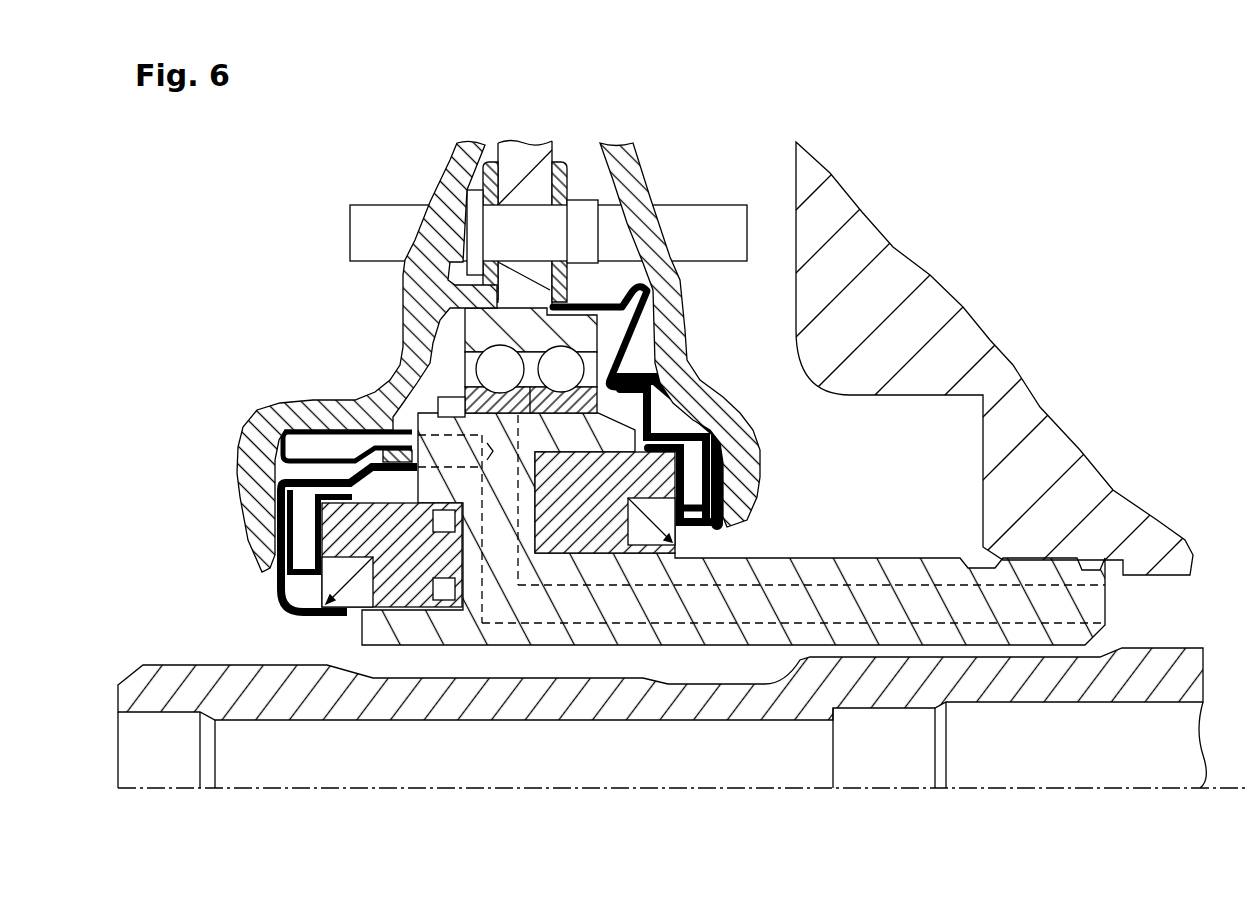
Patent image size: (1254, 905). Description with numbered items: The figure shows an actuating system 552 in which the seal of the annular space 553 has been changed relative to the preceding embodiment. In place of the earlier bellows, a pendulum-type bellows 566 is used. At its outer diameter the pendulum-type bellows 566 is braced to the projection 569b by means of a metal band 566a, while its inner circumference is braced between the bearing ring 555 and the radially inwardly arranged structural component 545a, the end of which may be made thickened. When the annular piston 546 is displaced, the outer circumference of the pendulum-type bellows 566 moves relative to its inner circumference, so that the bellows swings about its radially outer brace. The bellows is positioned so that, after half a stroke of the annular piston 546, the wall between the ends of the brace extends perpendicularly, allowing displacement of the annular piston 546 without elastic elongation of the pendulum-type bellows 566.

The structural component 545a is at (739, 451).
The annular piston 546 is at (593, 535).
The actuating system 552 is at (1130, 250).
The annular space 553 is at (548, 214).
The bearing ring 555 is at (697, 438).
The pendulum-type bellows 566 is at (685, 335).
The metal band 566a is at (643, 253).
The projection 569b is at (577, 215).